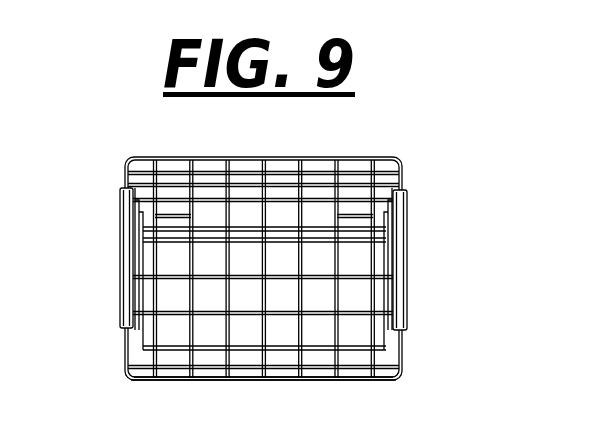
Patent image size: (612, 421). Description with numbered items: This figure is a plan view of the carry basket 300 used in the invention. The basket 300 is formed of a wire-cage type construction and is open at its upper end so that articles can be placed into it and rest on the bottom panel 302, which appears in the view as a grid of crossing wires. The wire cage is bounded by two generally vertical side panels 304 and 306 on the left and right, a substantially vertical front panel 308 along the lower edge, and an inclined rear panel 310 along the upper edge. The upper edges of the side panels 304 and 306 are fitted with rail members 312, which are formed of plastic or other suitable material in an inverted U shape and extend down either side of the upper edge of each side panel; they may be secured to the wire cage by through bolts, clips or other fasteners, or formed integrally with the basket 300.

The basket 300 is at (279, 262).
The bottom panel 302 is at (228, 295).
The side panel 304 is at (127, 181).
The side panel 306 is at (400, 354).
The front panel 308 is at (337, 385).
The rear panel 310 is at (228, 173).
The rail members 312 is at (118, 260).